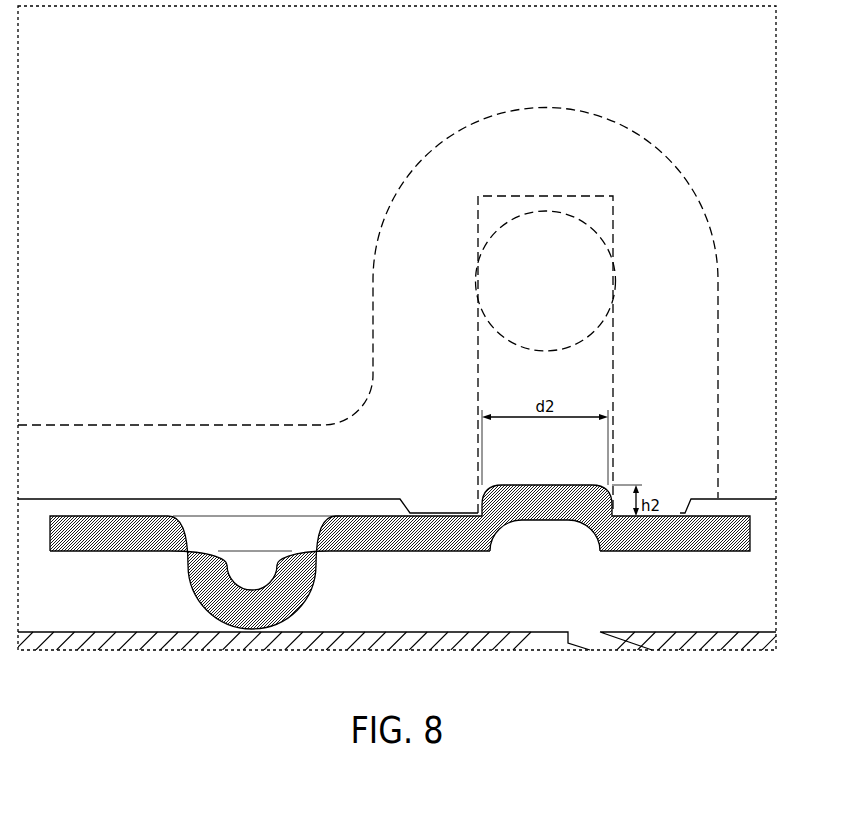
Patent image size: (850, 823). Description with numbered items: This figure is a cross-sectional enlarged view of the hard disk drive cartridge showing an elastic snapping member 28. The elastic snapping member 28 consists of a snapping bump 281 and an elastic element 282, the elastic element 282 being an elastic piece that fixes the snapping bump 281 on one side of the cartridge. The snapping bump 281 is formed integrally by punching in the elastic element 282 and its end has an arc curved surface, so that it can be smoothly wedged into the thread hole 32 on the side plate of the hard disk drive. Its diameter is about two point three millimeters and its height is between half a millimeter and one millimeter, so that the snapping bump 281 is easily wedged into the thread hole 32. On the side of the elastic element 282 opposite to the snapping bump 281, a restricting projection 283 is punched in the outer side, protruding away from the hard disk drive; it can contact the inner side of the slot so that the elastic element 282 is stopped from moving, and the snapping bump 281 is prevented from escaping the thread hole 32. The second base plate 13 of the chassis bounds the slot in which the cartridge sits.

The second base plate 13 is at (124, 633).
The elastic snapping member 28 is at (469, 603).
The snapping bump 281 is at (545, 521).
The elastic element 282 is at (673, 551).
The restricting projection 283 is at (247, 621).
The thread hole 32 is at (590, 381).